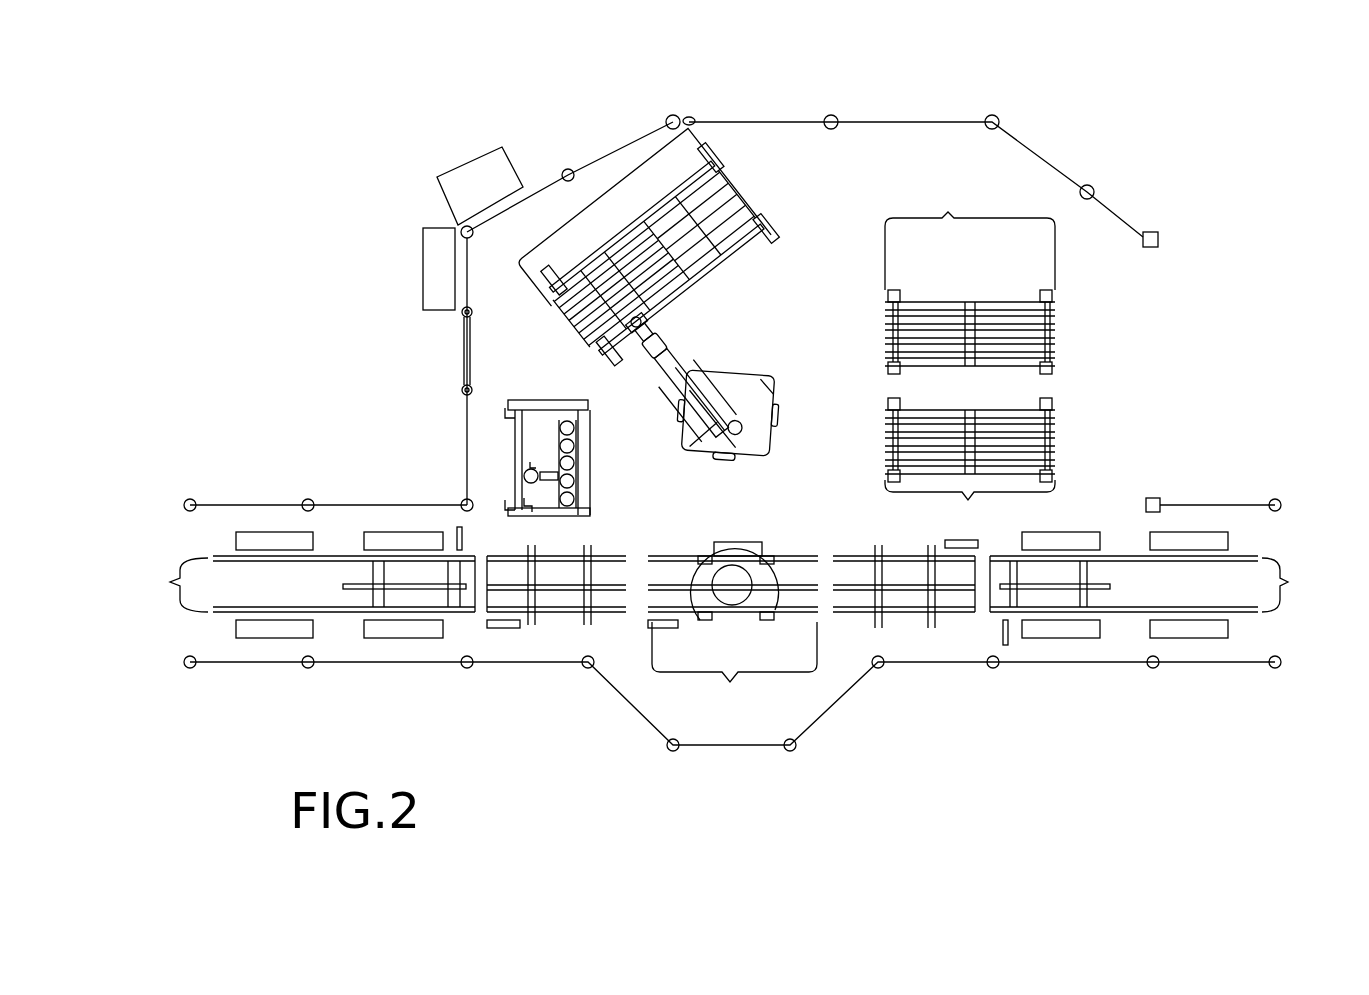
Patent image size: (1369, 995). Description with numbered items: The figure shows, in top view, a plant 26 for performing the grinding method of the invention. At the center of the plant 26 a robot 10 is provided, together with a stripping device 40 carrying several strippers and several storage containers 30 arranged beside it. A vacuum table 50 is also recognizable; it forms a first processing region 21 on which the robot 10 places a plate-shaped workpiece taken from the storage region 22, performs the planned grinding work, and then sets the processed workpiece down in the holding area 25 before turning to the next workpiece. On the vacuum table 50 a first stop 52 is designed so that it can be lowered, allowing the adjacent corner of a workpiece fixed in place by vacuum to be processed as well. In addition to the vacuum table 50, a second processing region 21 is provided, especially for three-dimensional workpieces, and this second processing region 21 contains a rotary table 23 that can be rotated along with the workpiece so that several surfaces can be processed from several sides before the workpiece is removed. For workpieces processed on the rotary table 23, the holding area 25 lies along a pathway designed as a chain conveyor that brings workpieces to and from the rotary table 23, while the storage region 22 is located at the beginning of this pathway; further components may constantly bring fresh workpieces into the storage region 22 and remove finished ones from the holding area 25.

The robot 10 is at (680, 360).
The processing region 21 is at (612, 174).
The storage region 22 is at (948, 218).
The rotary table 23 is at (736, 548).
The holding area 25 is at (143, 580).
The plant 26 is at (378, 148).
The storage container 30 is at (574, 461).
The stripping device 40 is at (590, 498).
The vacuum table 50 is at (740, 196).
The first stop 52 is at (600, 335).